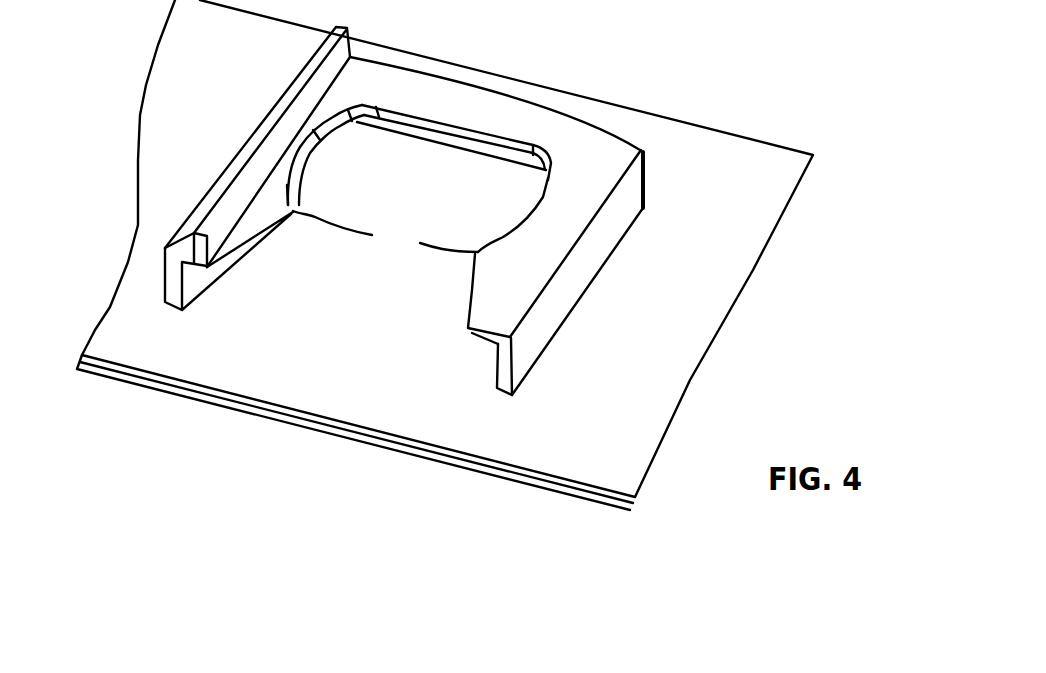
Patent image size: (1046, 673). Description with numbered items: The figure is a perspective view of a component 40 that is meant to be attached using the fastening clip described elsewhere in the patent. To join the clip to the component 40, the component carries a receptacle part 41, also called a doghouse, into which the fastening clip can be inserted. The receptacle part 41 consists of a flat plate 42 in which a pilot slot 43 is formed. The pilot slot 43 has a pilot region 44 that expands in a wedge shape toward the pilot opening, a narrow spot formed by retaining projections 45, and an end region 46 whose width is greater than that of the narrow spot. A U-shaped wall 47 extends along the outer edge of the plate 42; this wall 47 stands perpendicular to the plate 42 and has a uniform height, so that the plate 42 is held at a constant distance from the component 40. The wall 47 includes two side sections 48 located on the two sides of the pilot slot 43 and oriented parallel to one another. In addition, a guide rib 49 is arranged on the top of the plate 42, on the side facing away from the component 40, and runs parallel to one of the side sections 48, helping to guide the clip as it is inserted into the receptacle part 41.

The component 40 is at (623, 402).
The receptacle part 41 is at (429, 197).
The flat plate 42 is at (597, 143).
The pilot slot 43 is at (468, 174).
The pilot region 44 is at (470, 290).
The retaining projections 45 is at (478, 252).
The end region 46 is at (342, 160).
The U-shaped wall 47 is at (631, 212).
The side sections 48 is at (168, 272).
The guide rib 49 is at (233, 187).